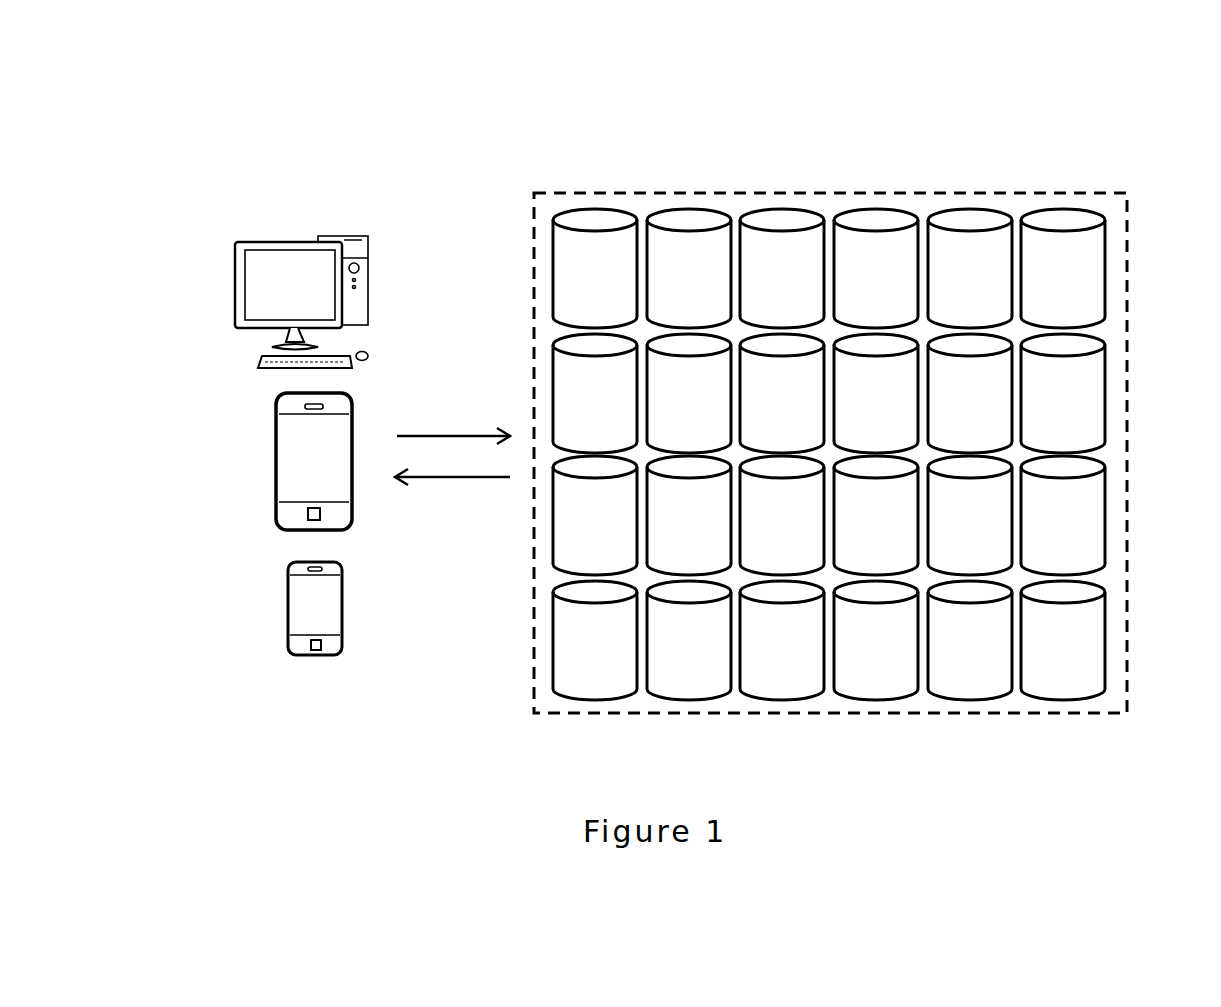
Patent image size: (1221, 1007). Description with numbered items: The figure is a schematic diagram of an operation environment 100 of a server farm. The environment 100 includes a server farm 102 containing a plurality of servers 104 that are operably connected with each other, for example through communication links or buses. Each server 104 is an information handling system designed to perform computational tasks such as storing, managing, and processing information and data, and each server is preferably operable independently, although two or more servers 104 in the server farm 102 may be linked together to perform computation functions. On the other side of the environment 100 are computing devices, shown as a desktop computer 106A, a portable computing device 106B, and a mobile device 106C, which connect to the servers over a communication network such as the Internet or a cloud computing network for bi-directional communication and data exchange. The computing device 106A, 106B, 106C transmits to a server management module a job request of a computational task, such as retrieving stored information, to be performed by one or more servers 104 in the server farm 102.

The operation environment 100 is at (1091, 105).
The server farm 102 is at (833, 192).
The server 104 is at (1085, 393).
The desktop computer 106A is at (255, 282).
The portable computing device 106B is at (292, 468).
The mobile device 106C is at (305, 613).